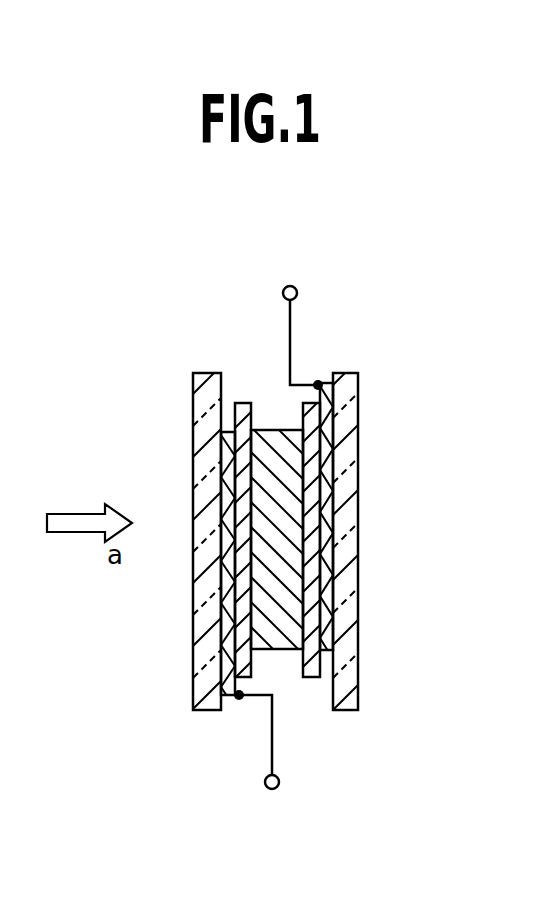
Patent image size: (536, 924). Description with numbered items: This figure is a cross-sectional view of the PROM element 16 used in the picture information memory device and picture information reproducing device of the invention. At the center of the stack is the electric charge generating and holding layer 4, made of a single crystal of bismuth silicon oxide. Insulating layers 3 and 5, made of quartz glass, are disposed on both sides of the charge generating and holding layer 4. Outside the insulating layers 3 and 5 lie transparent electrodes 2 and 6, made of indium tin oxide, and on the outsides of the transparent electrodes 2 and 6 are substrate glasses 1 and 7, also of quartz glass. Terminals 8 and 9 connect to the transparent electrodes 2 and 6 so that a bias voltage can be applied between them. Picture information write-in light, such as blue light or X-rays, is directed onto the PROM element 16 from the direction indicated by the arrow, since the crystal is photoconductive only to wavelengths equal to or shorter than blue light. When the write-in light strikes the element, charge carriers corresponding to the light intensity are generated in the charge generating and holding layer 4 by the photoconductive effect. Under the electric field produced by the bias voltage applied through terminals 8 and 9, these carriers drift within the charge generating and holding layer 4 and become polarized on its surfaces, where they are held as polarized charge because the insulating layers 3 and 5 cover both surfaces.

The substrate glass 1 is at (205, 373).
The transparent electrode 2 is at (235, 703).
The insulating layer 3 is at (243, 403).
The electric charge generating and holding layer 4 is at (290, 642).
The insulating layer 5 is at (303, 410).
The transparent electrode 6 is at (328, 652).
The substrate glass 7 is at (358, 407).
The terminal 8 is at (260, 759).
The terminal 9 is at (299, 318).
The PROM element 16 is at (417, 228).